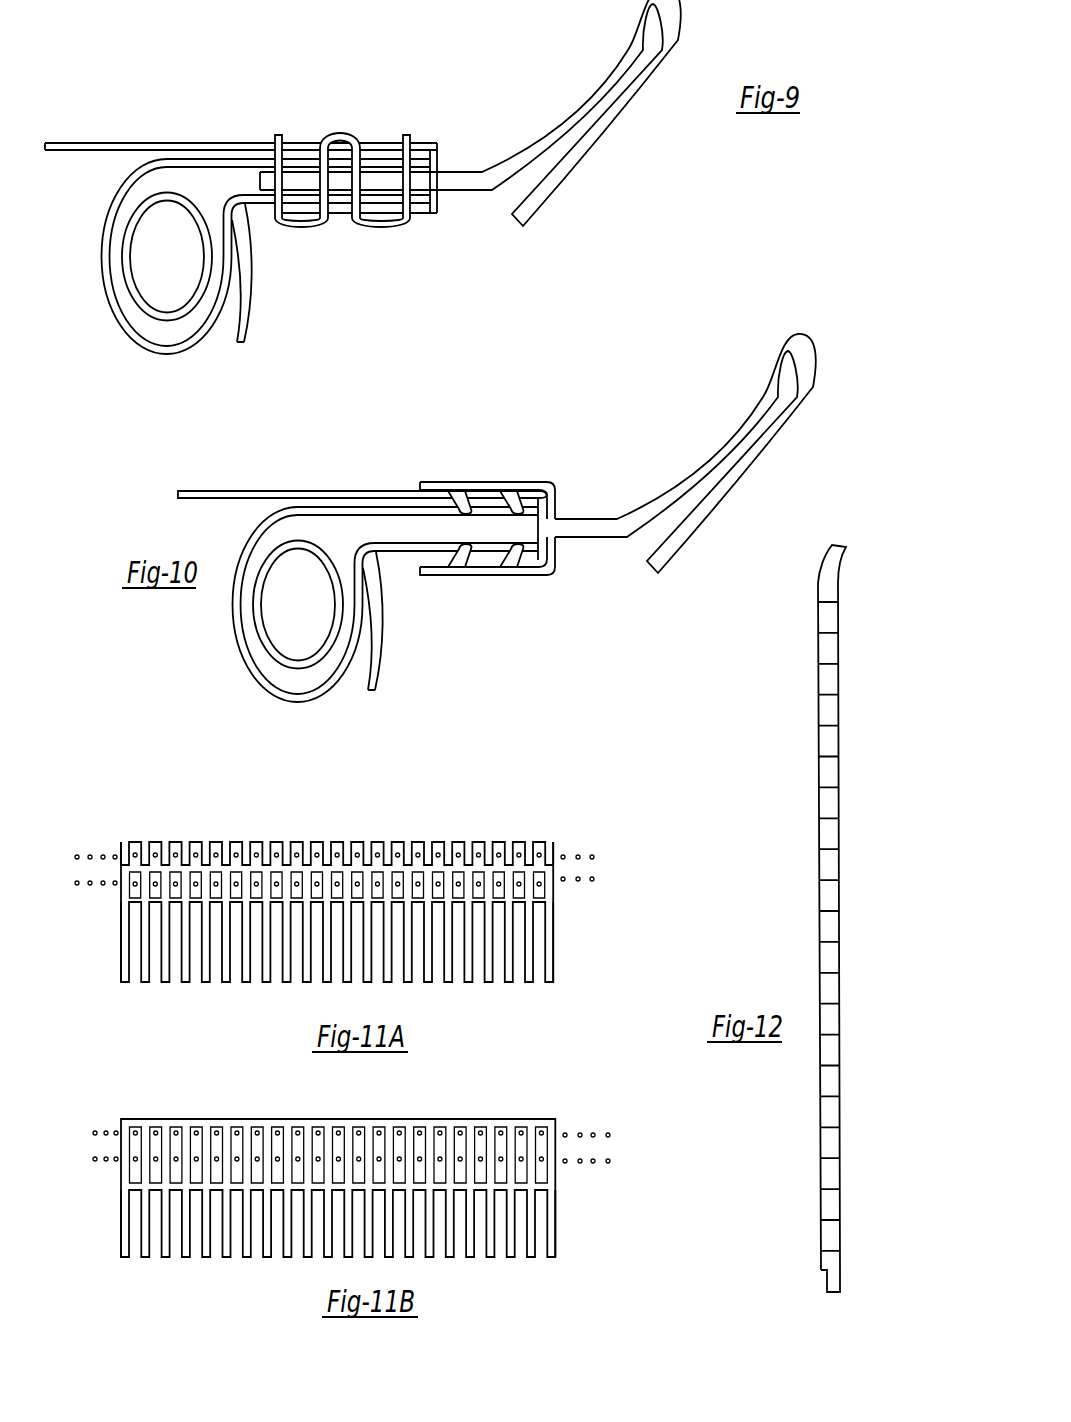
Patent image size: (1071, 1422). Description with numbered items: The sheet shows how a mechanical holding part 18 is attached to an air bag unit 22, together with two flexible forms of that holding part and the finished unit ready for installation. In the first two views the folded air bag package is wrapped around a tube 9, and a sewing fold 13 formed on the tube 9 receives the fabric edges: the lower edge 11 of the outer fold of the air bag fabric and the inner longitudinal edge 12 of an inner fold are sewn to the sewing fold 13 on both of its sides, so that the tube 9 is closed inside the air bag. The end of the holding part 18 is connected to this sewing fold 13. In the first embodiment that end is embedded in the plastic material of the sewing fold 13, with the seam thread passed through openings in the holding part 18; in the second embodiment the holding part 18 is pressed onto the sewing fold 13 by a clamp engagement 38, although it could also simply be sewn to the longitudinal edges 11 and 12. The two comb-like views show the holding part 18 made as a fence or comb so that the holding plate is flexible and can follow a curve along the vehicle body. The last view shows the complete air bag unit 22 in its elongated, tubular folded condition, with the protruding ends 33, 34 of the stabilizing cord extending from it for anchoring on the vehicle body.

In FIG. 9, the tube 9 is at (125, 305).
In FIG. 10, the tube 9 is at (253, 638).
In FIG. 9, the lower edge 11 is at (241, 146).
In FIG. 10, the lower edge 11 is at (377, 493).
In FIG. 10, the inner longitudinal edge 12 is at (517, 565).
In FIG. 9, the sewing fold 13 is at (343, 190).
In FIG. 10, the sewing fold 13 is at (491, 528).
In FIG. 9, the holding part 18 is at (557, 107).
In FIG. 10, the holding part 18 is at (627, 511).
In FIG. 11A, the holding part 18 is at (121, 900).
In FIG. 11B, the holding part 18 is at (121, 1177).
In FIG. 12, the air bag unit 22 is at (840, 958).
In FIG. 12, the protruding end 33 is at (840, 562).
In FIG. 12, the protruding end 34 is at (827, 1278).
In FIG. 10, the clamp engagement 38 is at (510, 492).